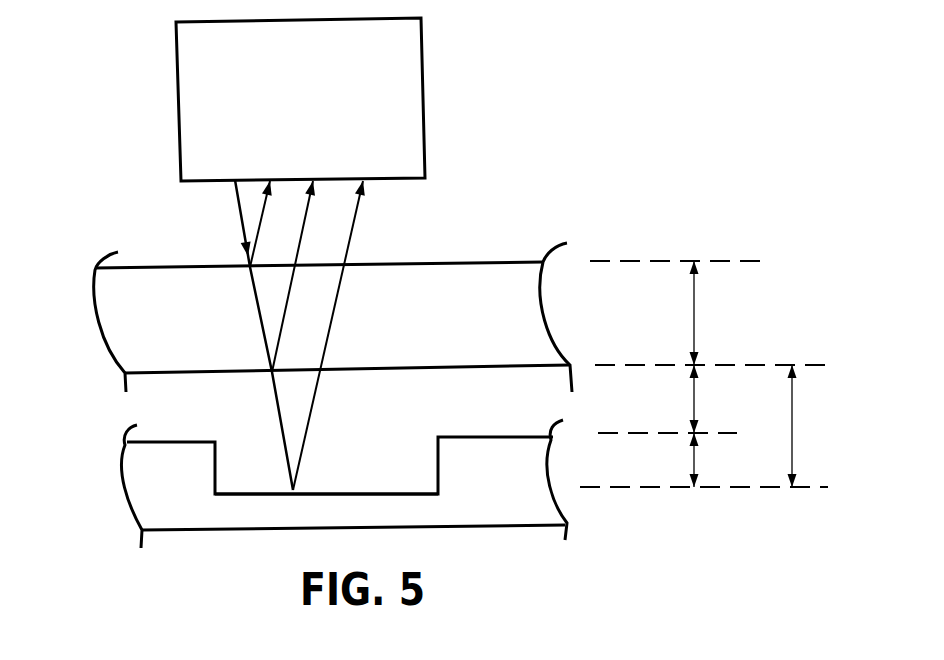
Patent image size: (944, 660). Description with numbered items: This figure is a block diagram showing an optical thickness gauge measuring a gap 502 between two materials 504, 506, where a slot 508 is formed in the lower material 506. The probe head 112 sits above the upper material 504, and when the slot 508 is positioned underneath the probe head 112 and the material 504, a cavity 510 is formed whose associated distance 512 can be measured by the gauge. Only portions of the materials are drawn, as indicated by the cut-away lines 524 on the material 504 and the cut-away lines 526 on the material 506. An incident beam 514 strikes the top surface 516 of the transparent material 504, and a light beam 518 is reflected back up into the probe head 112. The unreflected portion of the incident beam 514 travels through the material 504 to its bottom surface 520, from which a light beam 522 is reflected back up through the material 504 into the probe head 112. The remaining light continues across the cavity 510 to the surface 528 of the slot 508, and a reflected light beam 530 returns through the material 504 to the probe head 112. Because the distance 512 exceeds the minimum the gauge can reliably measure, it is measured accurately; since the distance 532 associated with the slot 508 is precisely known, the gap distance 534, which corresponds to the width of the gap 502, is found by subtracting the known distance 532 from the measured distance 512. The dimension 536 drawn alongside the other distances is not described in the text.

The probe head 112 is at (410, 160).
The gap 502 is at (526, 396).
The material 504 is at (297, 317).
The material 506 is at (338, 498).
The slot 508 is at (228, 444).
The cavity 510 is at (389, 453).
The distance 512 is at (814, 426).
The incident beam 514 is at (238, 203).
The top surface 516 is at (198, 272).
The light beam 518 is at (262, 232).
The bottom surface 520 is at (383, 366).
The light beam 522 is at (299, 254).
The cut-away lines 524 is at (92, 287).
The cut-away lines 526 is at (120, 458).
The surface 528 is at (235, 495).
The reflected light beam 530 is at (305, 452).
The distance 532 is at (704, 460).
The gap distance 534 is at (710, 399).
The upper substrate thickness 536 is at (676, 313).